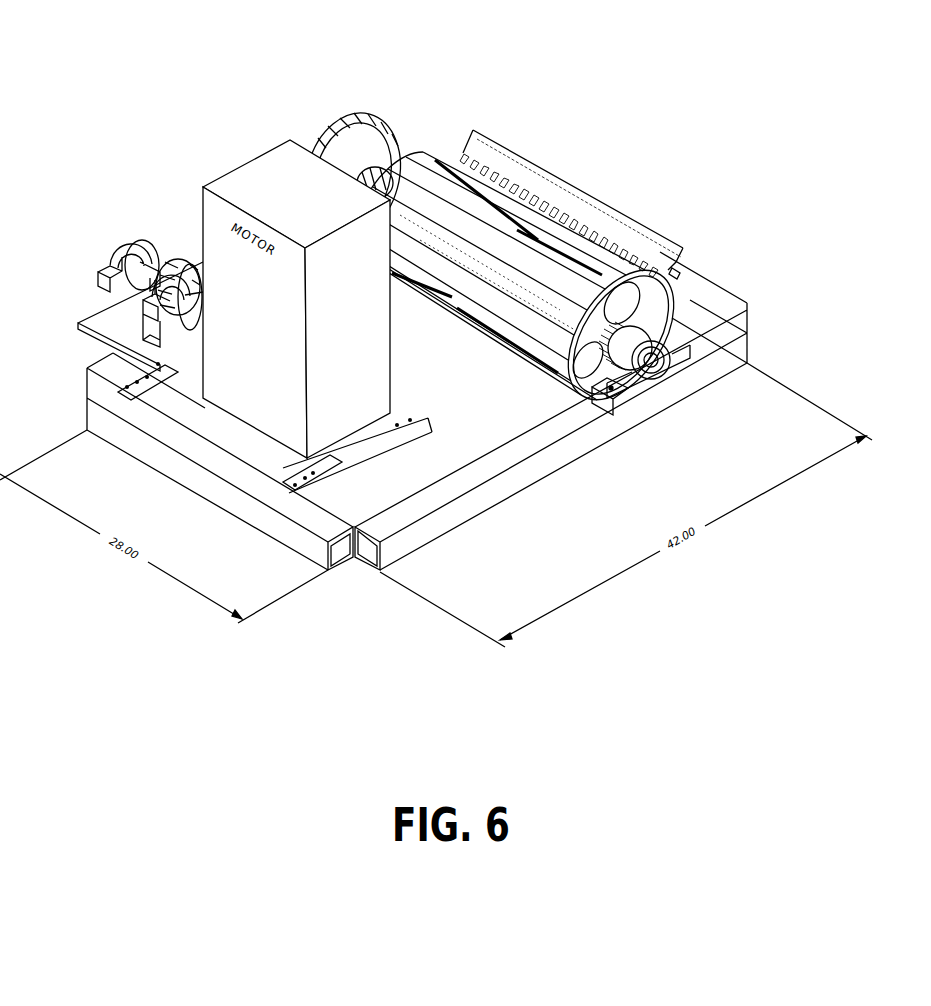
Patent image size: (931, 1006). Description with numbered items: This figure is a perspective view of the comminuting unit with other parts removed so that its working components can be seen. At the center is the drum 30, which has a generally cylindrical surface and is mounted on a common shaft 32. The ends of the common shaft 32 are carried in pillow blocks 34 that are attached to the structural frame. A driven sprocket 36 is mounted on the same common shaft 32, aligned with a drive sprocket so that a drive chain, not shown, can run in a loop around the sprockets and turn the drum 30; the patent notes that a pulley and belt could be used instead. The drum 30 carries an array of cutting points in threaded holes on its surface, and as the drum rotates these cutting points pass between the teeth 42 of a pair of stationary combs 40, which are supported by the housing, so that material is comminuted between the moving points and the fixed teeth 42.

The drum 30 is at (667, 297).
The common shaft 32 is at (647, 363).
The pillow blocks 34 is at (607, 400).
The driven sprocket 36 is at (367, 112).
The stationary combs 40 is at (578, 193).
The teeth 42 is at (487, 160).